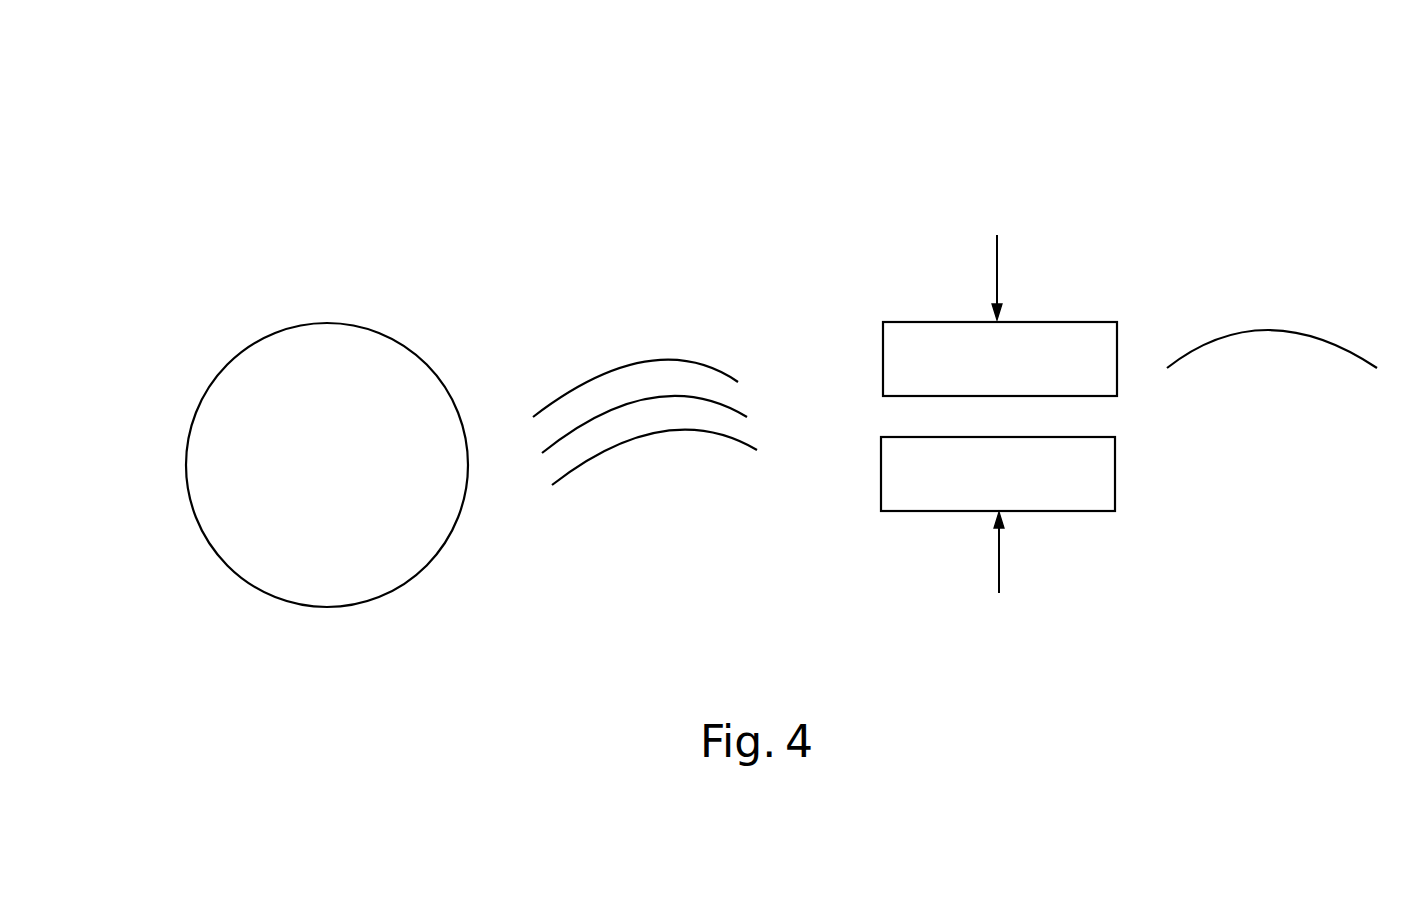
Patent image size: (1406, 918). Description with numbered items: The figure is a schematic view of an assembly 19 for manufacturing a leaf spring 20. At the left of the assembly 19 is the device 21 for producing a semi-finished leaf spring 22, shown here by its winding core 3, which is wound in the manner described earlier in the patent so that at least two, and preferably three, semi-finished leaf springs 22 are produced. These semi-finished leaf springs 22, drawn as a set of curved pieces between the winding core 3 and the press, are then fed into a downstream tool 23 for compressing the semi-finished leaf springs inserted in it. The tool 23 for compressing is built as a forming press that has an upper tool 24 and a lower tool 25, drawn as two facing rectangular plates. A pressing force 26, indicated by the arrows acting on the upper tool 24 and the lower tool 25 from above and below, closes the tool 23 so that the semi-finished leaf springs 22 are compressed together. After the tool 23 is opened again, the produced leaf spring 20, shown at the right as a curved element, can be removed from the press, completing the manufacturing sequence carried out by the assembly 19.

The winding core 3 is at (352, 582).
The assembly 19 is at (480, 152).
The leaf spring 20 is at (1258, 282).
The device 21 is at (171, 366).
The semi-finished leaf spring 22 is at (568, 392).
The tool for compressing 23 is at (913, 240).
The upper tool 24 is at (912, 366).
The lower tool 25 is at (898, 479).
The pressing force 26 is at (1016, 414).